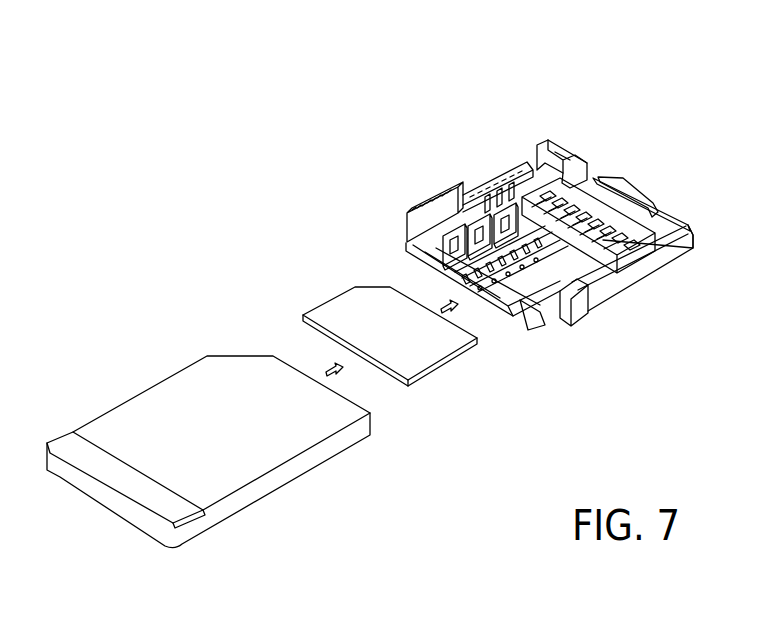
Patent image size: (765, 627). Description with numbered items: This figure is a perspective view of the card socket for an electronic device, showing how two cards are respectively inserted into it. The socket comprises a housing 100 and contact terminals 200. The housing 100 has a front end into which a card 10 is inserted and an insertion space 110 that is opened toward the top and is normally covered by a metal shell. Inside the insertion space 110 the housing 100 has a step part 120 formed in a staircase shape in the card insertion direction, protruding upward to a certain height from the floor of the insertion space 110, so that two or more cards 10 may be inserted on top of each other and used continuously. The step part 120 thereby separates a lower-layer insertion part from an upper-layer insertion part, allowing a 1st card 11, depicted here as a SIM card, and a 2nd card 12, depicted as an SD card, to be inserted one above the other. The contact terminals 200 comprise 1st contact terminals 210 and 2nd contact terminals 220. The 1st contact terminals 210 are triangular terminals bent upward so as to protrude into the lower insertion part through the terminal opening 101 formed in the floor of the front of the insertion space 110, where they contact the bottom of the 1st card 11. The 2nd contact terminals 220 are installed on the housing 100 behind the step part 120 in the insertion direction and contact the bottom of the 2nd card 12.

The card 10 is at (482, 463).
The 1st card 11 is at (452, 373).
The 2nd card 12 is at (278, 498).
The housing 100 is at (508, 284).
The terminal opening 101 is at (535, 282).
The insertion space 110 is at (418, 247).
The step part 120 is at (622, 258).
The contact terminals 200 is at (518, 119).
The 1st contact terminals 210 is at (503, 218).
The 2nd contact terminals 220 is at (547, 140).